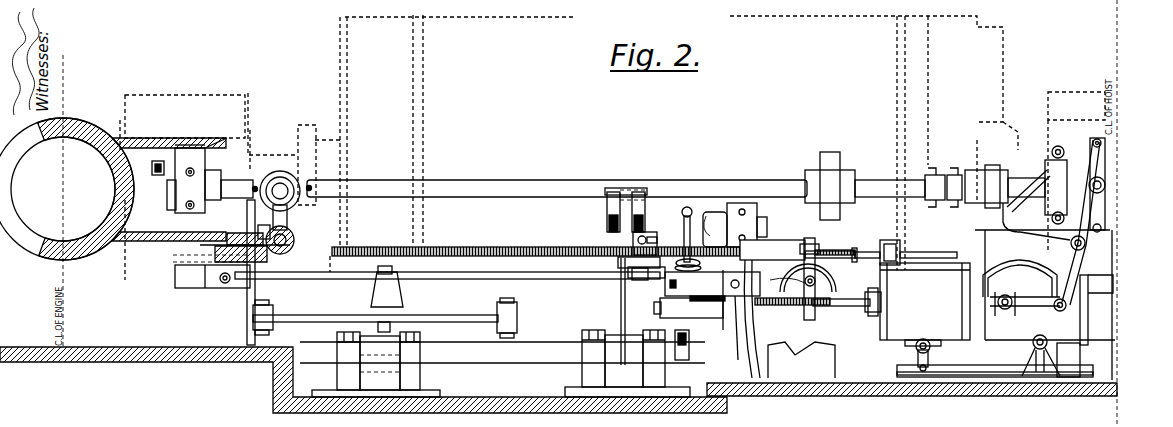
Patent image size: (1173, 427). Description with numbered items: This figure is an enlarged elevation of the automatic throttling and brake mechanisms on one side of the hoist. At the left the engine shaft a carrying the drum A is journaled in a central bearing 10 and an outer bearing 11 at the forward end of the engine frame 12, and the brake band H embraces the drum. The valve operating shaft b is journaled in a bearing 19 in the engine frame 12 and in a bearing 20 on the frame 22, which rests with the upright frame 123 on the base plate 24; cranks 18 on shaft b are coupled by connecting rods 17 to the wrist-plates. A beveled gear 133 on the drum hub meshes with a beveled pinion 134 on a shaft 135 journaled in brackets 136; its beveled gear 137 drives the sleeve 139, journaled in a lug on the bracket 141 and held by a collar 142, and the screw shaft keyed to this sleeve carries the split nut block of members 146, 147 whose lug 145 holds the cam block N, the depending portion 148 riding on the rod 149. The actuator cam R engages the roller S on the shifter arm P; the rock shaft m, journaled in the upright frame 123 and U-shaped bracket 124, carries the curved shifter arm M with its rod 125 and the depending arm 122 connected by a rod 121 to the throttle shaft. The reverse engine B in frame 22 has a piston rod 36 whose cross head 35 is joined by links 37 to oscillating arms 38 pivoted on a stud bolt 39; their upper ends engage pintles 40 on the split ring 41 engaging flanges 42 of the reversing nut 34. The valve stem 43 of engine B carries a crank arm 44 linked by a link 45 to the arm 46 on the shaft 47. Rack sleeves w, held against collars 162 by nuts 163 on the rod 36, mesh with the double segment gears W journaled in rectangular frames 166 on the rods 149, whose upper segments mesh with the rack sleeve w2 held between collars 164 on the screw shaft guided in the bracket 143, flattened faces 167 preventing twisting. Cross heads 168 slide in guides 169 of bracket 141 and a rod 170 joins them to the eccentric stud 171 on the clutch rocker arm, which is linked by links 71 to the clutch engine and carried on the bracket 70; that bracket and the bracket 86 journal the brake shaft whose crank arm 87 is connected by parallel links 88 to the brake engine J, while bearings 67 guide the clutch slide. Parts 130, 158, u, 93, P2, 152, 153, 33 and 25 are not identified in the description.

The engine frame 12 is at (92, 122).
The bearing 11 is at (182, 100).
The bearing 19 is at (186, 170).
The connecting rod 17 is at (152, 170).
The crank 18 is at (170, 186).
The bracket 136 is at (263, 190).
The beveled gear 137 is at (292, 236).
The shaft 135 is at (270, 228).
The worm gear 130 is at (243, 233).
The sleeve 139 is at (232, 246).
The collar 142 is at (185, 260).
The bracket 141 is at (190, 268).
The guide 169 is at (200, 275).
The cross head 168 is at (222, 284).
The post 158 is at (256, 280).
The bearing 67 is at (270, 330).
The beveled pinion 134 is at (300, 185).
The beveled gear 133 is at (305, 133).
The engine shaft a is at (270, 148).
The drum A is at (420, 106).
The brake band H is at (408, 218).
The rack u is at (502, 247).
The rod 149 is at (552, 279).
The rod 170 is at (340, 290).
The stud 171 is at (398, 300).
The rod 93 is at (470, 315).
The link 71 is at (518, 318).
The bracket 70 is at (410, 380).
The brake engine J is at (535, 372).
The bracket 86 is at (582, 378).
The crank arm 87 is at (621, 322).
The valve operating shaft b is at (610, 188).
The link 88 is at (632, 222).
The nut block member 146 is at (645, 236).
The nut block member 147 is at (650, 237).
The actuator cam R is at (672, 240).
The lug 145 is at (625, 250).
The cam block N is at (618, 262).
The depending portion 148 is at (632, 285).
The shifter rock shaft m is at (660, 278).
The link 125 is at (687, 207).
The shifter arm M is at (674, 203).
The roller S is at (690, 205).
The shifter arm P is at (715, 220).
The pawl P2 is at (715, 210).
The collar 164 is at (740, 218).
The slide block 152 is at (712, 284).
The nut 163 is at (660, 305).
The plate 153 is at (700, 302).
The U-shaped bracket 124 is at (722, 312).
The upright frame 123 is at (736, 330).
The rod 121 is at (748, 360).
The arm 122 is at (795, 342).
The rack sleeve w2 is at (780, 250).
The flattened face 167 is at (826, 250).
The rectangular frame 166 is at (808, 238).
The double segment gear W is at (822, 285).
The rack sleeve w is at (790, 306).
The collar 162 is at (838, 307).
The piston rod 36 is at (865, 307).
The bracket 143 is at (890, 240).
The auxiliary reverse engine B is at (895, 322).
The valve stem 43 is at (924, 339).
The crank arm 44 is at (918, 360).
The link 45 is at (980, 370).
The base plate 24 is at (1005, 378).
The bearing 20 is at (970, 172).
The hub 33 is at (1015, 170).
The frame 22 is at (1045, 305).
The reversing nut 34 is at (1060, 146).
The central bearing 10 is at (1064, 90).
The split ring 41 is at (1090, 167).
The flange 42 is at (1096, 139).
The pintle 40 is at (1089, 185).
The oscillating arm 38 is at (1082, 268).
The stud shaft 39 is at (1085, 244).
The cross head 35 is at (1025, 311).
The link 37 is at (1056, 309).
The shaft 47 is at (1088, 340).
The arm 46 is at (1051, 356).
The plate 25 is at (967, 355).